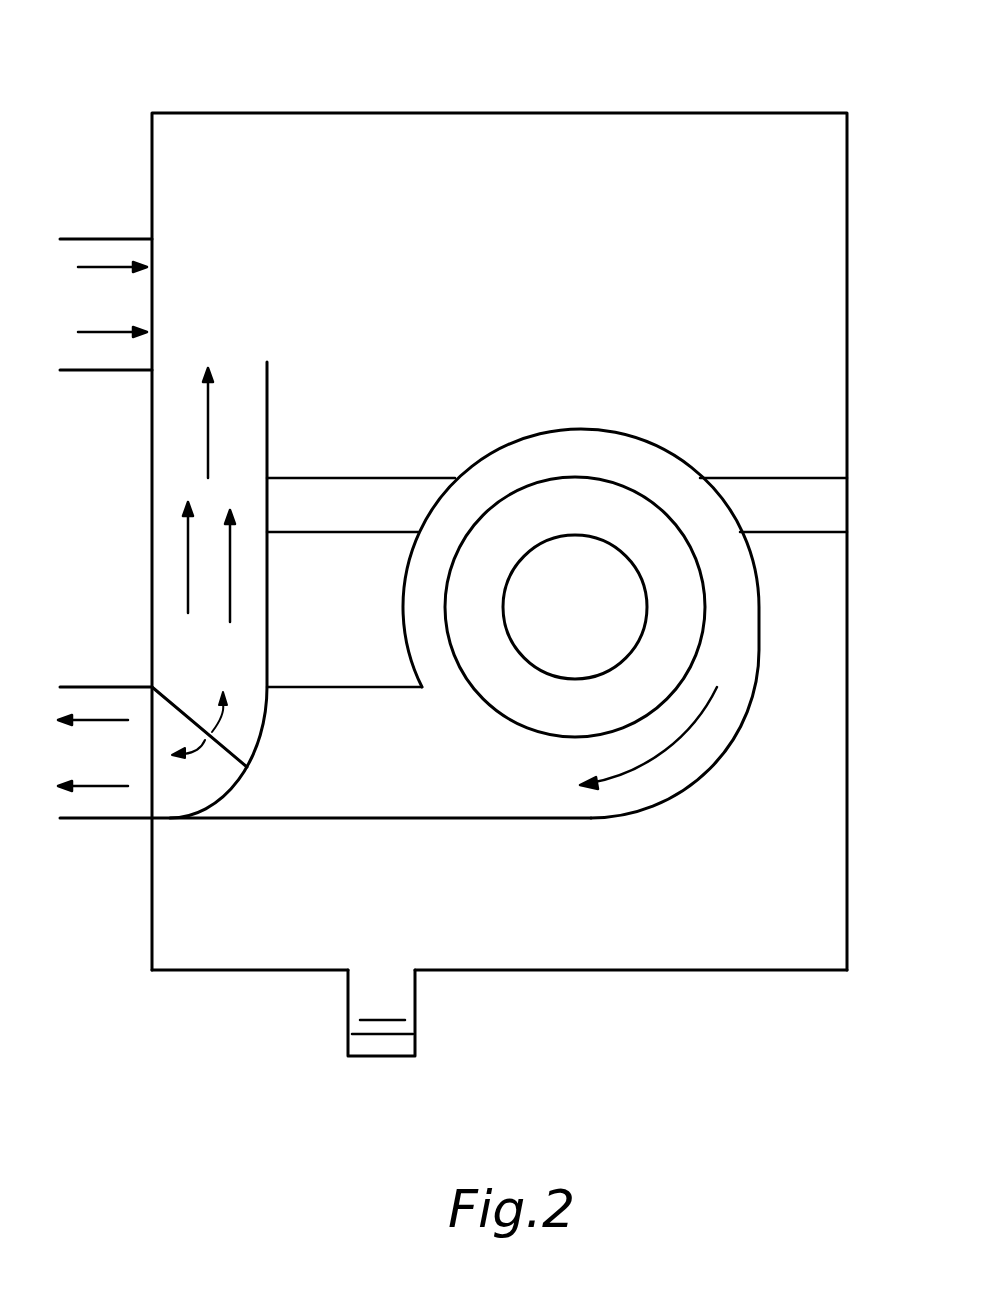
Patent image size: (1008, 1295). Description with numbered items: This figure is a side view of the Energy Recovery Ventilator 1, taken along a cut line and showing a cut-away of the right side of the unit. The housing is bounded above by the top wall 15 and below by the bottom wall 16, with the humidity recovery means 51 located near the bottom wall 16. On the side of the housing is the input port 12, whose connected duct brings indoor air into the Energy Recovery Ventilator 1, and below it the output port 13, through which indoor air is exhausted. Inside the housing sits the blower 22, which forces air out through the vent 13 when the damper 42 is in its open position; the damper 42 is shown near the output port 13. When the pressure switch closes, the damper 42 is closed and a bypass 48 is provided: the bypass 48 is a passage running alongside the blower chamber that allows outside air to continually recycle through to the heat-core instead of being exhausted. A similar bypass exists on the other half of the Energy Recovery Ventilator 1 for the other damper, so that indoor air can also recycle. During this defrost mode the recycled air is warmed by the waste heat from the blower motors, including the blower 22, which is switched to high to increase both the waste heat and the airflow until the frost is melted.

The Energy Recovery Ventilator 1 is at (732, 28).
The input port 12 is at (87, 372).
The output port 13 is at (92, 820).
The top wall 15 is at (352, 113).
The bottom wall 16 is at (602, 972).
The blower 22 is at (757, 663).
The damper 42 is at (253, 760).
The bypass 48 is at (253, 607).
The humidity recovery means 51 is at (415, 1028).